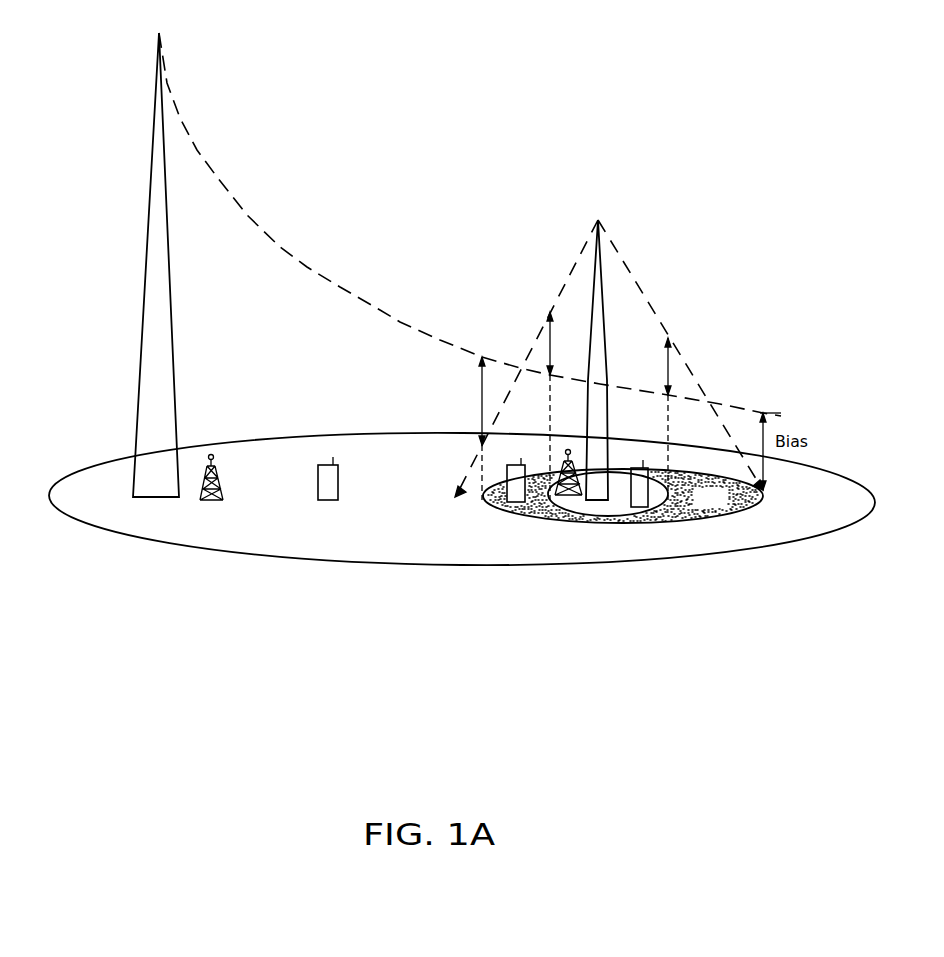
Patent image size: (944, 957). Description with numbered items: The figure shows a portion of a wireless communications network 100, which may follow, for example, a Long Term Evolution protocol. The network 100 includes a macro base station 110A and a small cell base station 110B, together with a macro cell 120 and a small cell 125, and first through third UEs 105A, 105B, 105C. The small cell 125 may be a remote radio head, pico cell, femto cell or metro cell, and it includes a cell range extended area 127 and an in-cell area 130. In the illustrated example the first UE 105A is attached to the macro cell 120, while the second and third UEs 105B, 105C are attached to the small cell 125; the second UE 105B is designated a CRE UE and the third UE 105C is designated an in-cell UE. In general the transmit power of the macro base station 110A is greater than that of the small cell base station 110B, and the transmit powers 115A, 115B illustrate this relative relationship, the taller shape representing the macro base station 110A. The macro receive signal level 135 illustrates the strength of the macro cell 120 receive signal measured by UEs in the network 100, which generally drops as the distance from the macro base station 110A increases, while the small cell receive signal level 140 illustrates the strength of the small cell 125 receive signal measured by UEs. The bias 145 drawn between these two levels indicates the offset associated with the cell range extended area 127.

The wireless communications network 100 is at (77, 76).
The first UE 105A is at (320, 485).
The second UE 105B is at (490, 489).
The third UE 105C is at (640, 467).
The macro base station 110A is at (222, 487).
The small cell base station 110B is at (568, 450).
The transmit power 115A is at (171, 258).
The transmit power 115B is at (603, 320).
The macro cell 120 is at (406, 563).
The small cell 125 is at (538, 521).
The cell range extended area 127 is at (623, 496).
The in-cell area 130 is at (617, 523).
The macro receive signal level 135 is at (203, 160).
The small cell receive signal level 140 is at (585, 243).
The bias 145 is at (480, 401).